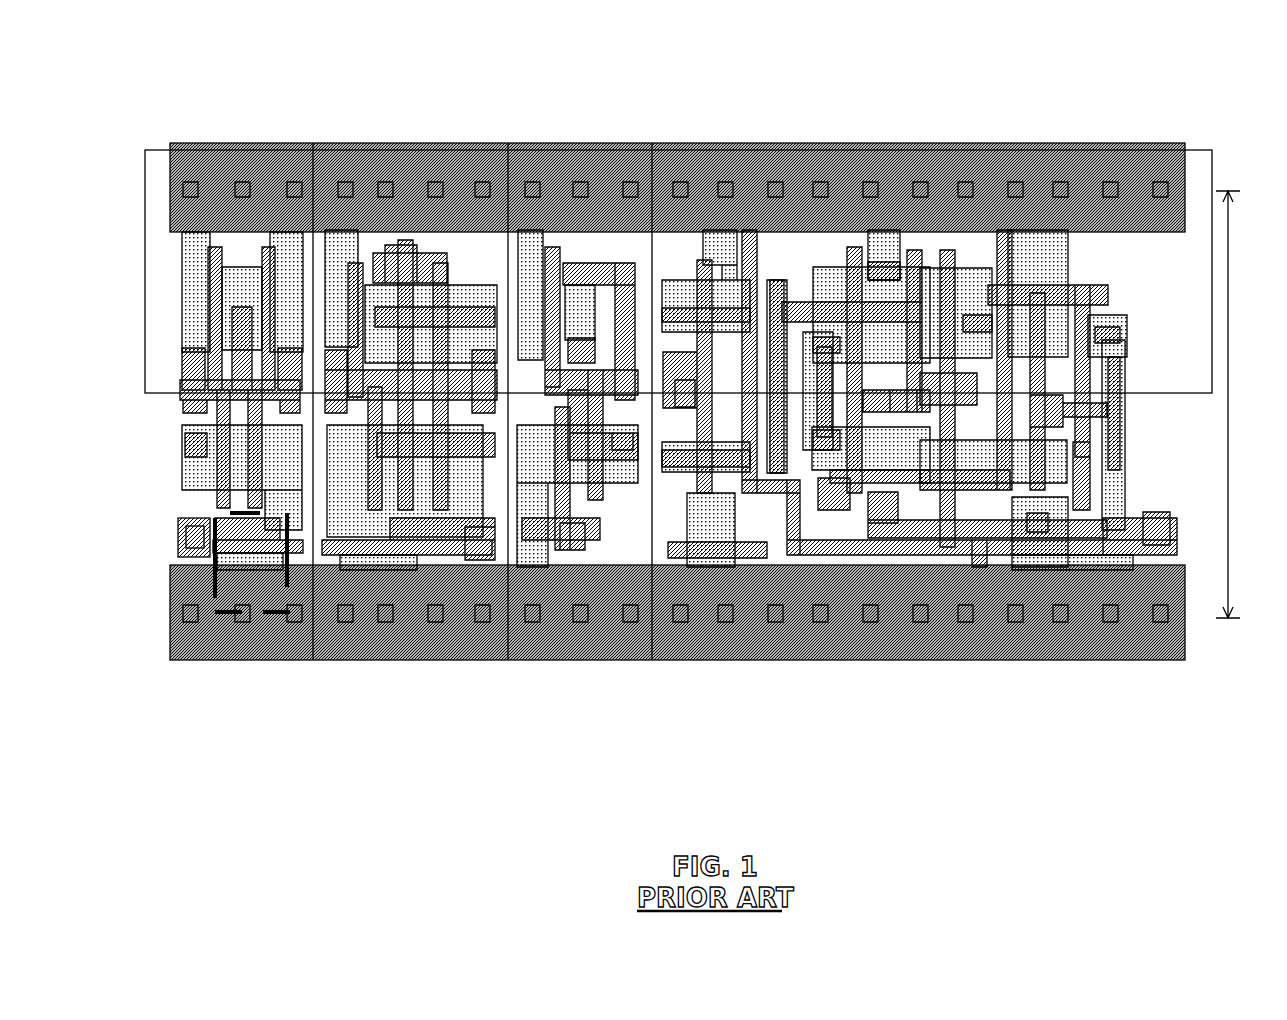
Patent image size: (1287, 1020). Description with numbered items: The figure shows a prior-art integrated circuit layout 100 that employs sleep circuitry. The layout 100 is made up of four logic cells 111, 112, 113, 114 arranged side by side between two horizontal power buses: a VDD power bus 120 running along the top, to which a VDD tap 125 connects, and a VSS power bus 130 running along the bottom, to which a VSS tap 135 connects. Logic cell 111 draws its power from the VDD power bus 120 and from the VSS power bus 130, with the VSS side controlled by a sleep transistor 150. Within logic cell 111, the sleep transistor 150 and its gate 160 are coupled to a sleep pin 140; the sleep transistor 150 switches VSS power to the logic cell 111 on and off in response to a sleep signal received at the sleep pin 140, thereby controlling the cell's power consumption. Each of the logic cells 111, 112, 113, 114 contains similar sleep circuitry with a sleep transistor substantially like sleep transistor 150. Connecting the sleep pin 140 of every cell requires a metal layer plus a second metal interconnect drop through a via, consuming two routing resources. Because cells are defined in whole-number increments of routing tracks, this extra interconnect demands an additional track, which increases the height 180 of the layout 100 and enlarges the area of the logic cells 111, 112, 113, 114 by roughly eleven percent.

The integrated circuit layout 100 is at (121, 67).
The logic cell 111 is at (310, 137).
The logic cell 112 is at (506, 137).
The logic cell 113 is at (648, 137).
The logic cell 114 is at (1185, 137).
The VDD power bus 120 is at (195, 192).
The VDD tap 125 is at (190, 178).
The VSS power bus 130 is at (170, 612).
The VSS tap 135 is at (193, 630).
The sleep pin 140 is at (178, 540).
The sleep transistor 150 is at (264, 627).
The gate 160 is at (292, 555).
The height 180 is at (1228, 282).